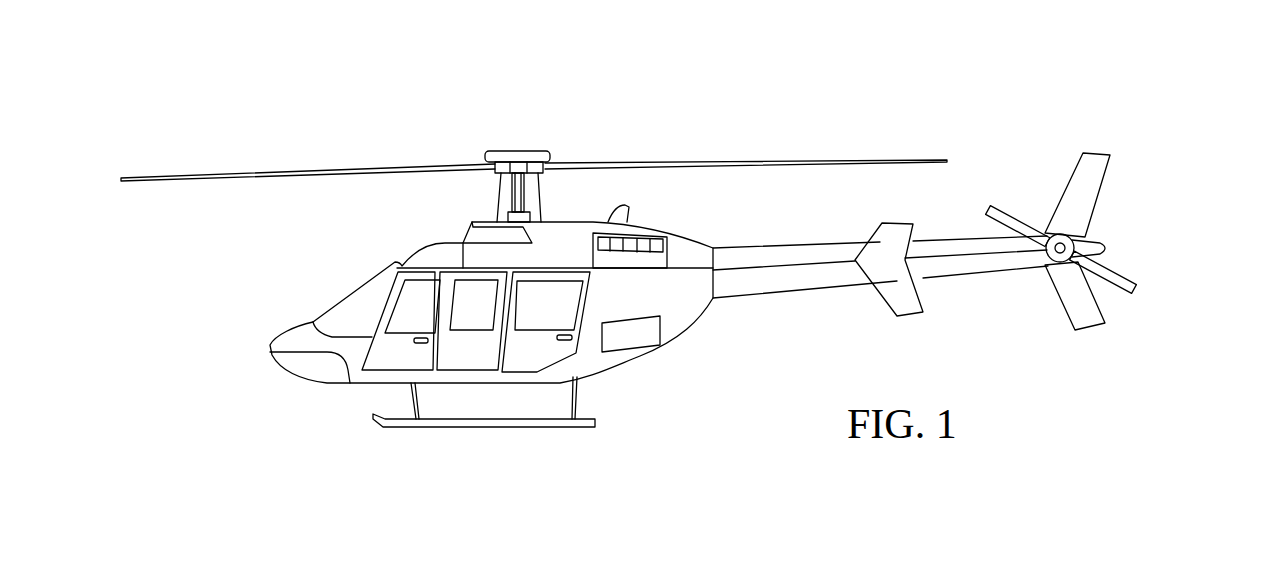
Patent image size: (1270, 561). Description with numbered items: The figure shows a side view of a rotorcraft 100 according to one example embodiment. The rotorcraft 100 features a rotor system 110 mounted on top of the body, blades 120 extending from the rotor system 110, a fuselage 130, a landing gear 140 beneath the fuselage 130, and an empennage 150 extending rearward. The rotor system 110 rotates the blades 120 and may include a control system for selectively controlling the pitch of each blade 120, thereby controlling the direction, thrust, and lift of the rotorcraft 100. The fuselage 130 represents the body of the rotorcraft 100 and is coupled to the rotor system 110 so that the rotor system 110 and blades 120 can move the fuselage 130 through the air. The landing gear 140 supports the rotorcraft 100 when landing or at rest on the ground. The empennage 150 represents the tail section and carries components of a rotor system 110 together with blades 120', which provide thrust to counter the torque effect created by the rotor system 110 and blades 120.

The rotorcraft 100 is at (366, 107).
The rotor system 110 is at (517, 150).
The blades 120 is at (534, 144).
The blades 120' is at (1104, 250).
The fuselage 130 is at (312, 382).
The landing gear 140 is at (463, 427).
The empennage 150 is at (793, 297).